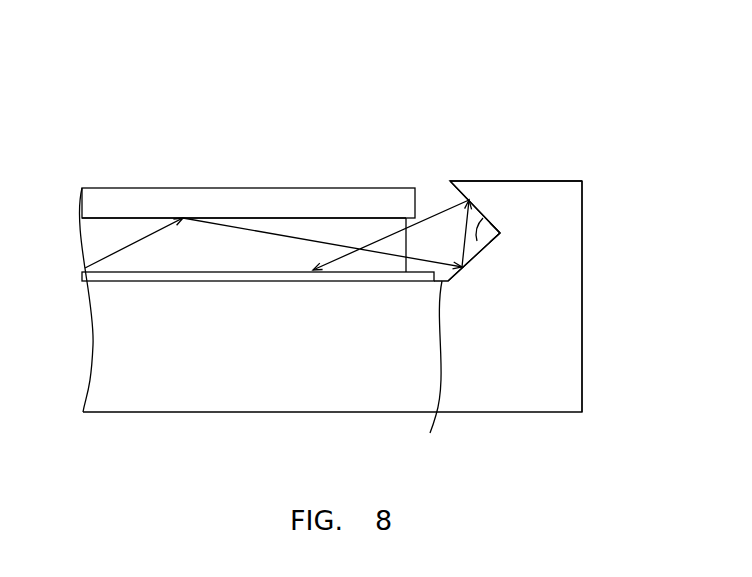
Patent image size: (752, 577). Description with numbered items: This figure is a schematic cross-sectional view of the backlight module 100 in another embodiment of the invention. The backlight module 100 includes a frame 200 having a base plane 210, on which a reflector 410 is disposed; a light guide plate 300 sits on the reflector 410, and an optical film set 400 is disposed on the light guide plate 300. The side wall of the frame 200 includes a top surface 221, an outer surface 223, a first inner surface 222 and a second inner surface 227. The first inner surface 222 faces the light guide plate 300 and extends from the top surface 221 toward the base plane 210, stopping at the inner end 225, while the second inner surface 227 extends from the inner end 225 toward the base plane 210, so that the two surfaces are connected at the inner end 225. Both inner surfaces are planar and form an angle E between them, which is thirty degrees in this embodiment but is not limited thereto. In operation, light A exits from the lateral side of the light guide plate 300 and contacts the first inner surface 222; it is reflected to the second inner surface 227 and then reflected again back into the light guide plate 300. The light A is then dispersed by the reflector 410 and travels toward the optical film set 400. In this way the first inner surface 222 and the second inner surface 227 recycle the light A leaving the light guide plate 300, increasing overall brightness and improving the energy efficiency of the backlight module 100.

The backlight module 100 is at (97, 58).
The frame 200 is at (548, 388).
The base plane 210 is at (434, 370).
The top surface 221 is at (515, 181).
The first inner surface 222 is at (469, 200).
The outer surface 223 is at (582, 215).
The inner end 225 is at (500, 234).
The second inner surface 227 is at (475, 256).
The light guide plate 300 is at (90, 240).
The optical film set 400 is at (88, 203).
The reflector 410 is at (92, 277).
The light A is at (298, 237).
The angle E is at (478, 231).